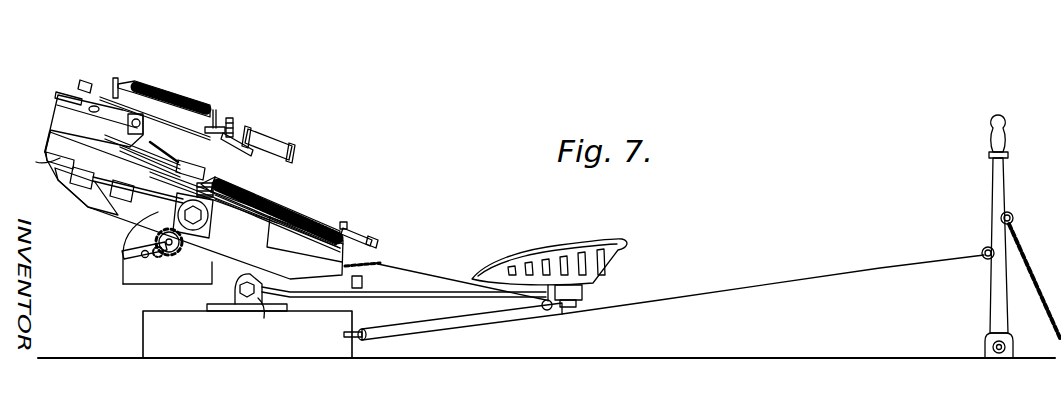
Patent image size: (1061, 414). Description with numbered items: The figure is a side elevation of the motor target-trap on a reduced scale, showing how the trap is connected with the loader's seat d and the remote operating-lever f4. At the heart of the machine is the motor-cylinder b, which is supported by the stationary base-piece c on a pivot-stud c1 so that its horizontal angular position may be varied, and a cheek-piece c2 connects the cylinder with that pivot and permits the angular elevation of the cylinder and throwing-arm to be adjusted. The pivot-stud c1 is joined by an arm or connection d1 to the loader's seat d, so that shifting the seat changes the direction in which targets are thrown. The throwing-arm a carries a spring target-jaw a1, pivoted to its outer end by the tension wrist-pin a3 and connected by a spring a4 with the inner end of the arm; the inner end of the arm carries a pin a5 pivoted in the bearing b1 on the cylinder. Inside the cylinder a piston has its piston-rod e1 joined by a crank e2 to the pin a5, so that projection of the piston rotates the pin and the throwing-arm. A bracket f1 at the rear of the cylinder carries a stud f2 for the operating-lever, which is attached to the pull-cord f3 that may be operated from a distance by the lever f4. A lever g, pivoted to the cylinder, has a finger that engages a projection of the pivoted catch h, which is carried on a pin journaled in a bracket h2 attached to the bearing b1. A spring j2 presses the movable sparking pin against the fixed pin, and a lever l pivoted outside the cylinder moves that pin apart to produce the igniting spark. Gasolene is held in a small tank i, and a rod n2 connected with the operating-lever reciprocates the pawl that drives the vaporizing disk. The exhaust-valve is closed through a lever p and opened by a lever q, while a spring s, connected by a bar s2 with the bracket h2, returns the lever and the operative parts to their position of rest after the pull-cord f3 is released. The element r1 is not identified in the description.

The stationary base-piece c is at (247, 334).
The pivot-stud c1 is at (224, 303).
The cheek-piece c2 is at (260, 304).
The arm or connection d1 is at (404, 298).
The loader's seat d is at (545, 249).
The pull-cord f3 is at (379, 265).
The lever f4 is at (1006, 177).
The motor-cylinder b is at (128, 222).
The lever p is at (303, 217).
The bearing b1 is at (52, 134).
The lever q is at (98, 203).
The crank e2 is at (43, 162).
The piston-rod e1 is at (78, 183).
The bracket h2 is at (58, 103).
The pin r1 is at (60, 94).
The pin a5 is at (85, 84).
The pivoted catch h is at (141, 117).
The spring a4 is at (181, 99).
The lever g is at (162, 138).
The throwing-arm a is at (218, 117).
The tension wrist-pin a3 is at (236, 126).
The spring target-jaw a1 is at (275, 142).
The bar s2 is at (170, 165).
The spring j2 is at (207, 167).
The lever l is at (262, 206).
The spring s is at (255, 191).
The bracket f1 is at (344, 224).
The stud f2 is at (360, 237).
The tank i is at (125, 271).
The rod n2 is at (176, 258).